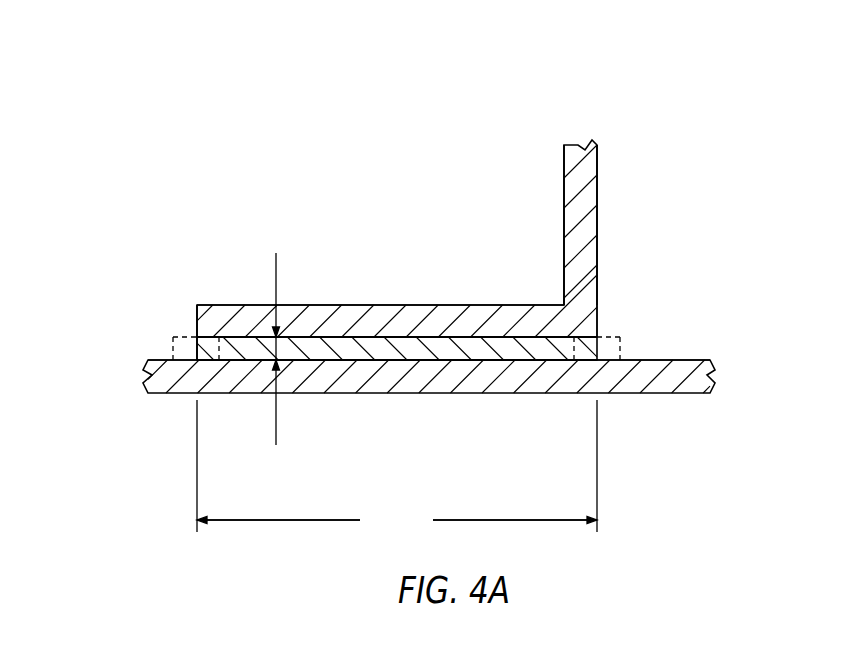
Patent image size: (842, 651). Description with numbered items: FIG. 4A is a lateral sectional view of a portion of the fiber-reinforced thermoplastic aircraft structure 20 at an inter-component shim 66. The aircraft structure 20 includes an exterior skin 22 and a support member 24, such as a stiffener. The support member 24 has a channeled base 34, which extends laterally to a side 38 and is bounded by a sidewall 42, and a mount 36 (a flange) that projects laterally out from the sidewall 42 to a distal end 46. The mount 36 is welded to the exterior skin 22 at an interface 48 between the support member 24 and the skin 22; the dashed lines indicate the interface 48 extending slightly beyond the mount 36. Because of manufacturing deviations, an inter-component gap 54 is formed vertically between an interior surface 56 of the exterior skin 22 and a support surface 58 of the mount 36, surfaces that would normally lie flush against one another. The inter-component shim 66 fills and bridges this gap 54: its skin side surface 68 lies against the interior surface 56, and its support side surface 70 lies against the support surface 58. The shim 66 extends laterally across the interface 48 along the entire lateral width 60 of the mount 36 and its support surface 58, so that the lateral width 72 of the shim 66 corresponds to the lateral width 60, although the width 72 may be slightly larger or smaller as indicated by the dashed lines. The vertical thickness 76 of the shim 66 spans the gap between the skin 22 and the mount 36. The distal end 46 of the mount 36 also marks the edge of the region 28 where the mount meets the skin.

The aircraft structure 20 is at (584, 85).
The exterior skin 22 is at (733, 382).
The support member 24 is at (620, 160).
The base plate 28 is at (197, 322).
The channeled base 34 is at (560, 153).
The mount 36 is at (231, 305).
The side of the channeled base 38 is at (564, 181).
The sidewall 42 is at (590, 200).
The distal end 46 is at (153, 329).
The interface 48 is at (620, 351).
The inter-component gap 54 is at (487, 337).
The interior surface 56 is at (430, 360).
The support surface 58 is at (385, 337).
The lateral width of the mount 60 is at (397, 467).
The inter-component shim 66 is at (502, 360).
The skin side surface 68 is at (333, 360).
The support side surface 70 is at (340, 337).
The lateral width of the inter-component shim 72 is at (397, 520).
The vertical thickness 76 is at (277, 427).